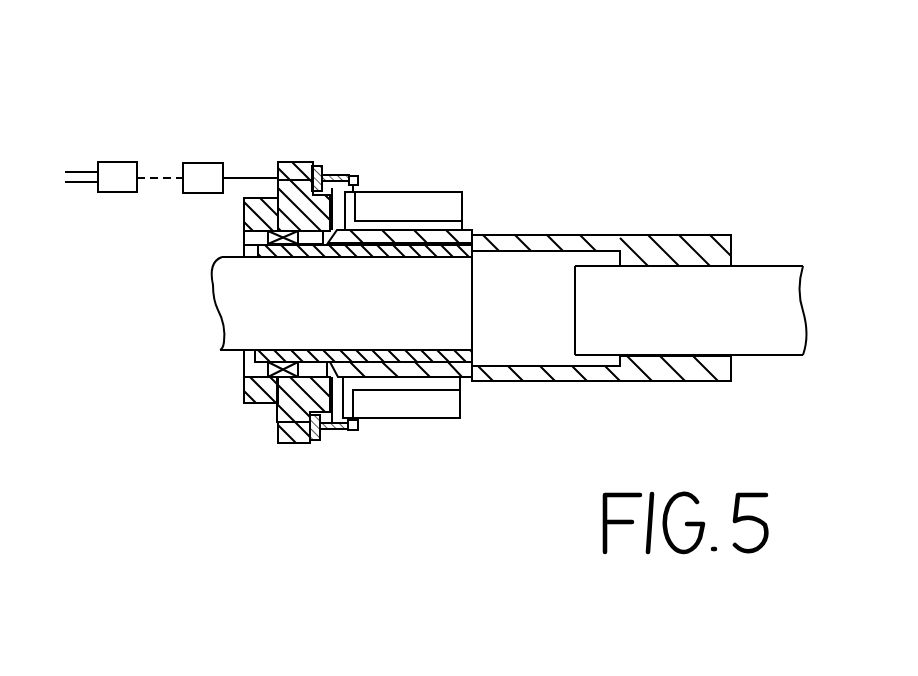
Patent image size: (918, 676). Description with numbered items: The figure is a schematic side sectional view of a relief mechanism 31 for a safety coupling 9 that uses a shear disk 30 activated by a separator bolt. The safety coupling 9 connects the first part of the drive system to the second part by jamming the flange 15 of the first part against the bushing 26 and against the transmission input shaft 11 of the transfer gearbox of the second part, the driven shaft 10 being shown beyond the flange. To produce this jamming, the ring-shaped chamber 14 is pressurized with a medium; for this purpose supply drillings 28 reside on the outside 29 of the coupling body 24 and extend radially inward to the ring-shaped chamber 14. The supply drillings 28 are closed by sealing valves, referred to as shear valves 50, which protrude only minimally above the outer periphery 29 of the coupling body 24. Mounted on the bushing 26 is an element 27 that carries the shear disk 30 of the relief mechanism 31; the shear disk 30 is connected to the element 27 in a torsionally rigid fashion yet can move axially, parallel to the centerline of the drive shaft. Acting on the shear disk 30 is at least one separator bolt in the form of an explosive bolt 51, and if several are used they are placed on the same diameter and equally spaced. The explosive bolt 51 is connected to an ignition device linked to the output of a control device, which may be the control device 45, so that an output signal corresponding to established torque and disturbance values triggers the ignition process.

The safety coupling 9 is at (466, 220).
The driven shaft 10 is at (684, 327).
The transmission input shaft 11 is at (352, 319).
The ring-shaped chamber 14 is at (383, 222).
The flange 15 is at (648, 236).
The coupling body 24 is at (465, 207).
The bushing 26 is at (475, 253).
The element 27 is at (287, 165).
The supply drillings 28 is at (357, 218).
The outside of the coupling body 29 is at (428, 190).
The shear disk 30 is at (317, 433).
The relief mechanism 31 is at (329, 118).
The control device 45 is at (123, 187).
The shear valves 50 is at (353, 176).
The explosive bolt 51 is at (280, 425).